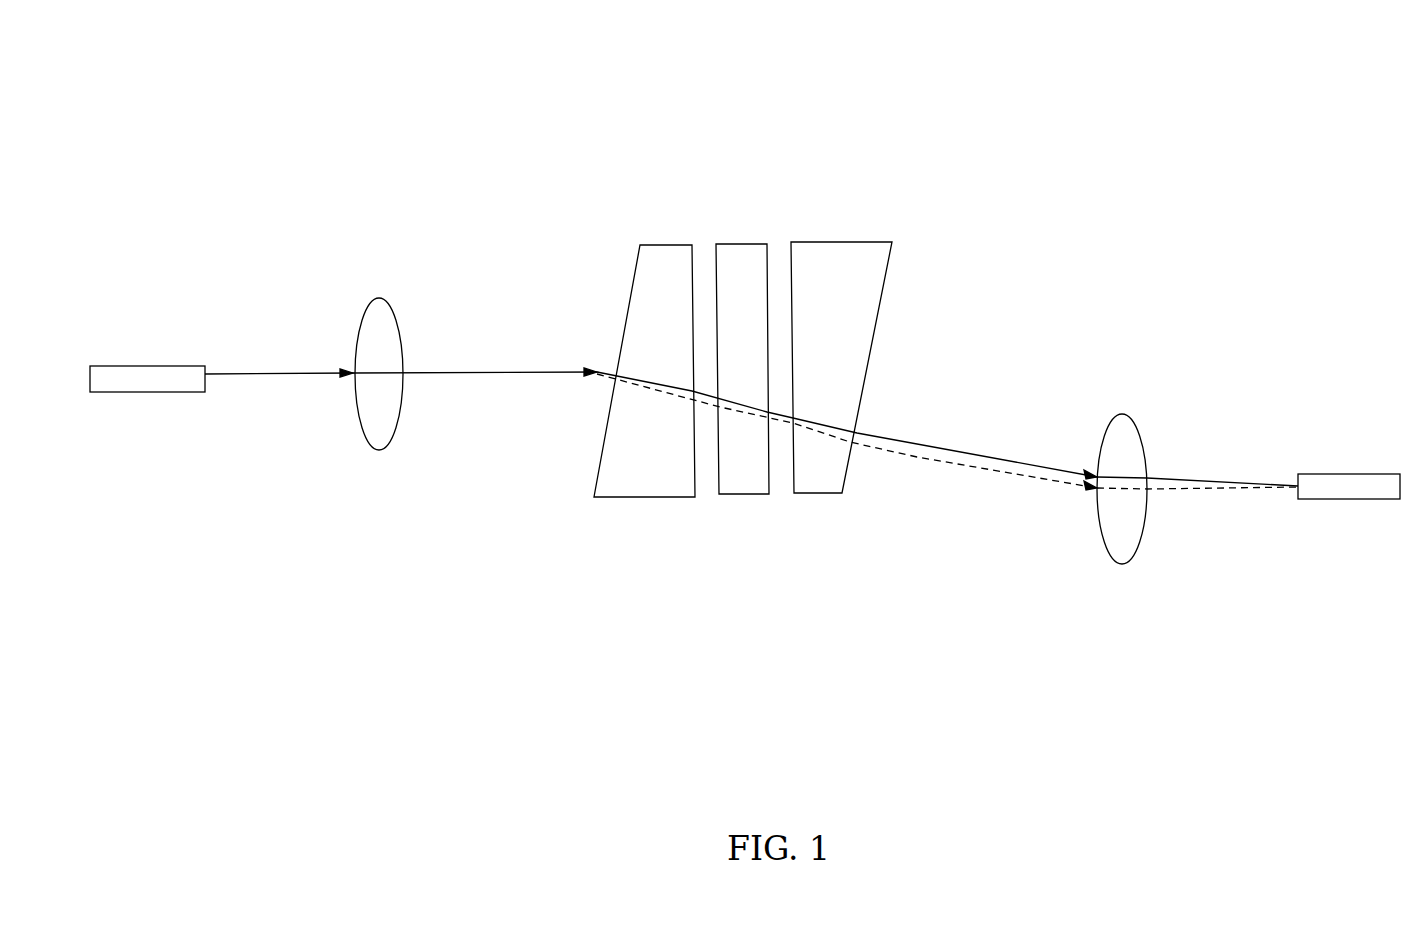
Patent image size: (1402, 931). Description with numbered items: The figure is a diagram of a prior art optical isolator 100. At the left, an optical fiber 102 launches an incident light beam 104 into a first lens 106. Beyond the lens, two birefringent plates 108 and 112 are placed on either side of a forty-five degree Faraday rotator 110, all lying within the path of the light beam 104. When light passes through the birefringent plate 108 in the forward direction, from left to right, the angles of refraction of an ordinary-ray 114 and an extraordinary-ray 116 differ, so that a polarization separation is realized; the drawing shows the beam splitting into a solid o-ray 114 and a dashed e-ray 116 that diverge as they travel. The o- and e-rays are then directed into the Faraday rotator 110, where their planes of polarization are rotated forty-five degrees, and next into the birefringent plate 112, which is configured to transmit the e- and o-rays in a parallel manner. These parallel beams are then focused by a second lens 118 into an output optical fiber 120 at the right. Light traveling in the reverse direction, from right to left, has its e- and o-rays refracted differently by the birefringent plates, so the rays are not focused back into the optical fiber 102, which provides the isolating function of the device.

The optical isolator 100 is at (200, 97).
The optical fiber 102 is at (163, 335).
The incident light beam 104 is at (310, 382).
The first lens 106 is at (377, 283).
The birefringent plate 108 is at (600, 230).
The Faraday rotator 110 is at (737, 238).
The birefringent plate 112 is at (863, 227).
The ordinary-ray 114 is at (1043, 424).
The extraordinary-ray 116 is at (1023, 498).
The second lens 118 is at (1117, 347).
The optical fiber 120 is at (1345, 458).